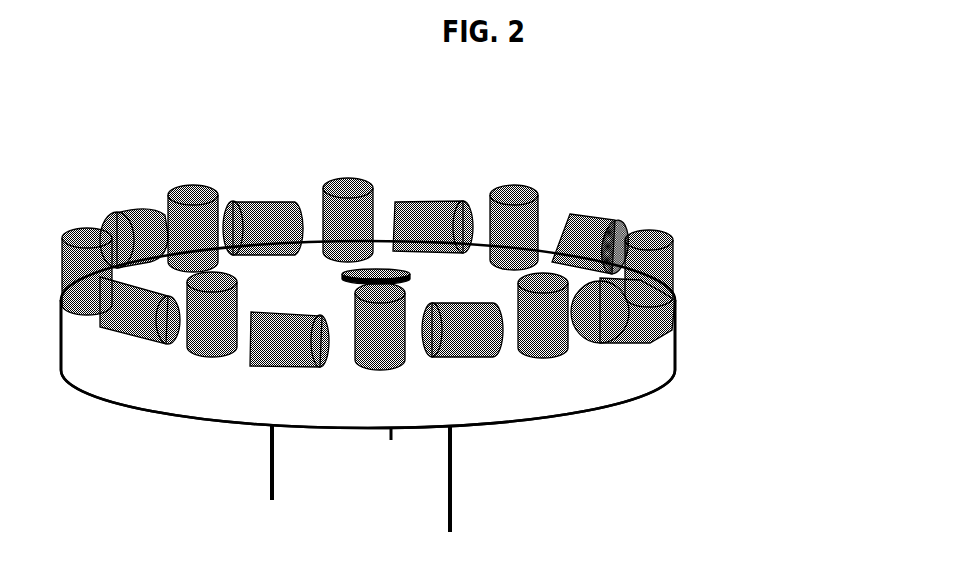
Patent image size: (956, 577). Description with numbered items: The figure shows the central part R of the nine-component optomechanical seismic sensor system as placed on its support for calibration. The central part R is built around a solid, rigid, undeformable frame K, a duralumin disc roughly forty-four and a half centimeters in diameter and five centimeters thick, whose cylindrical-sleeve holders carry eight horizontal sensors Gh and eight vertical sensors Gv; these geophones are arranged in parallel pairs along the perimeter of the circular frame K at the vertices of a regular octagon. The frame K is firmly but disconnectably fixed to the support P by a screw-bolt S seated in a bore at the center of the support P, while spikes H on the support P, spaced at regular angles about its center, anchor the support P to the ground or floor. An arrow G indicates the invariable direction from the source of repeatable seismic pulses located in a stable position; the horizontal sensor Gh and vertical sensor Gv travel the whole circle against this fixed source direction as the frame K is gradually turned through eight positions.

The screw-bolt S is at (376, 272).
The central part R is at (640, 163).
The arrow G is at (738, 305).
The frame K is at (110, 370).
The support P is at (178, 418).
The spikes H is at (270, 468).
The horizontal sensors Gh is at (470, 335).
The vertical sensors Gv is at (548, 327).